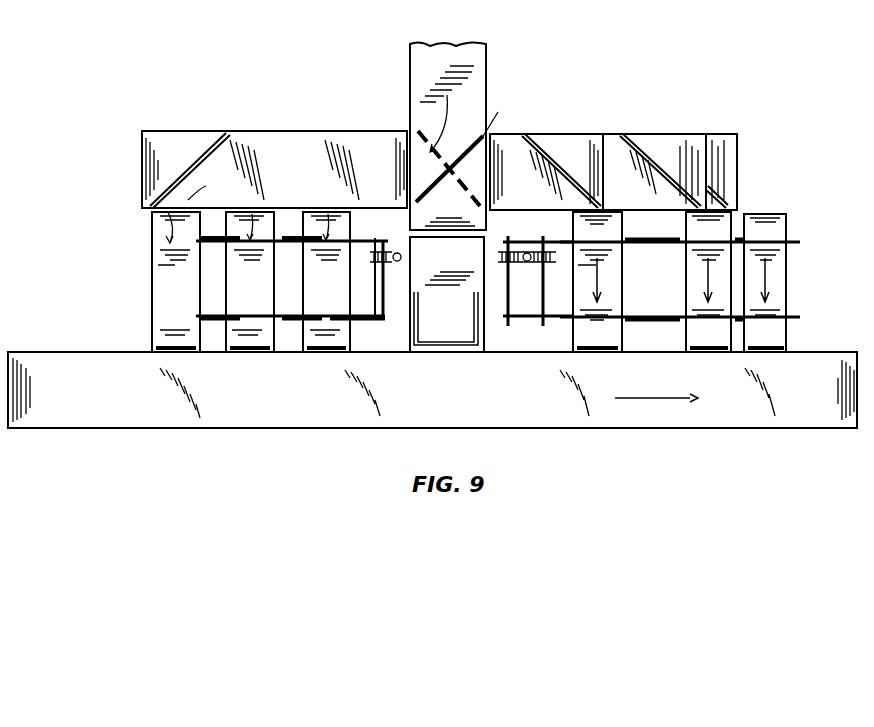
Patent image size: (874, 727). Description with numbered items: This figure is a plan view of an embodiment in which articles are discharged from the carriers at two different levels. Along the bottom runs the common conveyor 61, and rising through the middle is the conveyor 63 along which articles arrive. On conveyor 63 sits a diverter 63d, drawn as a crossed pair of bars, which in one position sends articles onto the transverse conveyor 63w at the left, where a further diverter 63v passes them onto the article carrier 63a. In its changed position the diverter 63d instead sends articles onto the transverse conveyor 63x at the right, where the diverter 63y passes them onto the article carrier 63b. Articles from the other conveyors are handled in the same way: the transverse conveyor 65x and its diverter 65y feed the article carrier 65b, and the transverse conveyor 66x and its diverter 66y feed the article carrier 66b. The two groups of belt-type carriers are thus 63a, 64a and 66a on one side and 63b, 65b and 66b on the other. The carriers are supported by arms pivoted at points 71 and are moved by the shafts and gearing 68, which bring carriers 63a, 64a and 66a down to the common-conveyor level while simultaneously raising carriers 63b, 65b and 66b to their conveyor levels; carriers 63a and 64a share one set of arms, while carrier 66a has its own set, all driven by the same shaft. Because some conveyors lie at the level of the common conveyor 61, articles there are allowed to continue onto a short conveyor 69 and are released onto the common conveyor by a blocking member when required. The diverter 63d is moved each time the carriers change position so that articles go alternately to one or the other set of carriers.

The common conveyor 61 is at (118, 350).
The conveyor 63 is at (459, 52).
The diverter 63v is at (213, 146).
The transverse conveyor 63w is at (348, 138).
The diverter 63d is at (502, 116).
The diverter 63y is at (538, 142).
The transverse conveyor 63x is at (582, 142).
The diverter 65y is at (636, 142).
The transverse conveyor 65x is at (682, 142).
The transverse conveyor 66x is at (738, 158).
The diverter 66y is at (726, 206).
The article carrier 63a is at (154, 318).
The article carrier 64a is at (250, 353).
The article carrier 66a is at (328, 353).
The shafts and gearing 68 is at (396, 262).
The pivot point 71 is at (380, 322).
The short conveyor 69 is at (484, 338).
The article carrier 63b is at (622, 274).
The article carrier 65b is at (686, 284).
The article carrier 66b is at (786, 296).